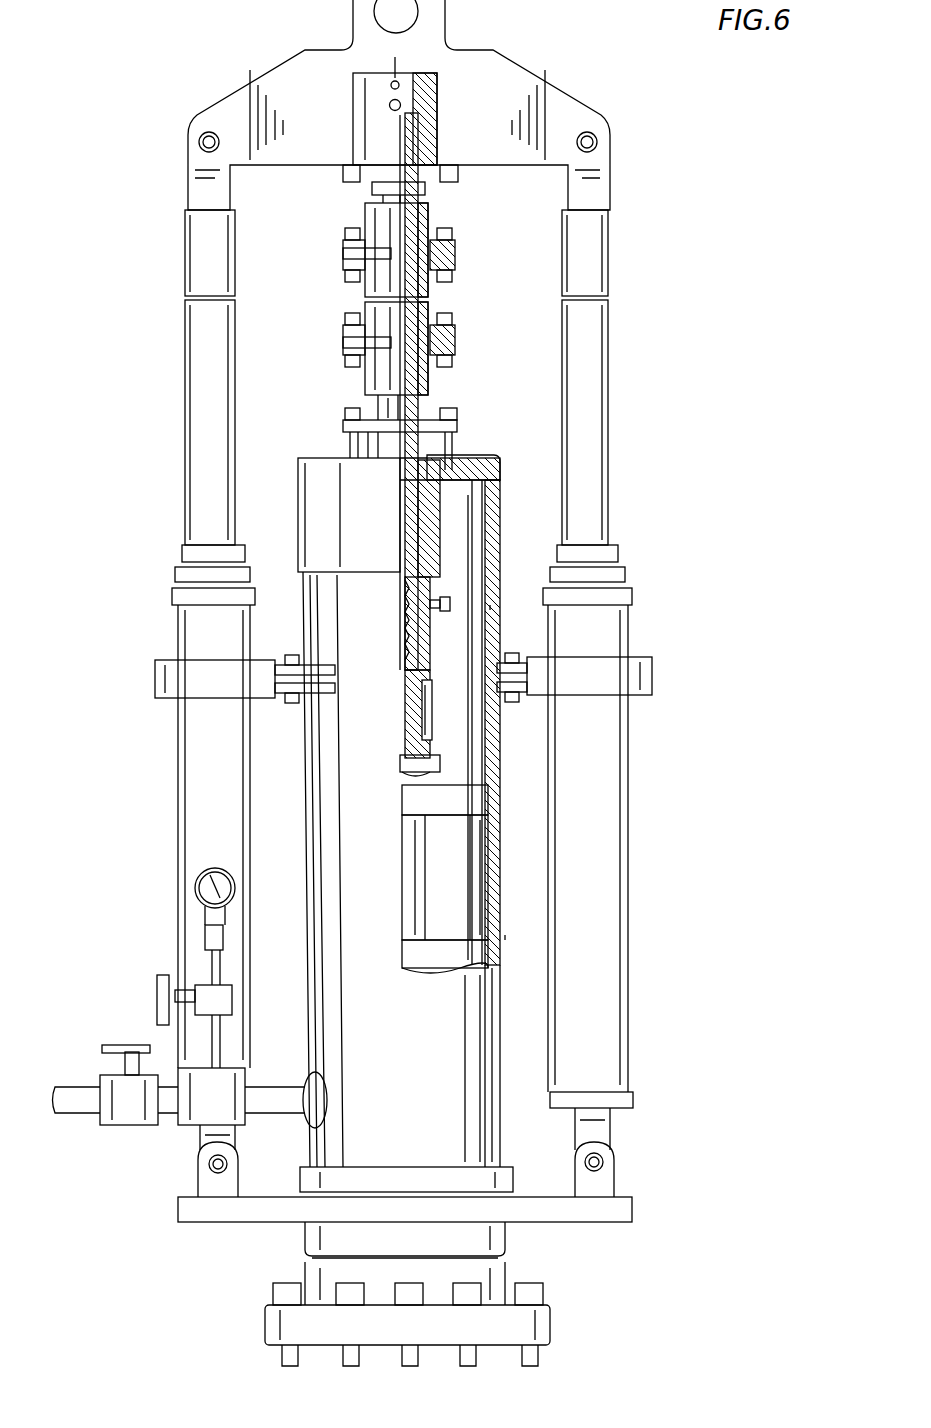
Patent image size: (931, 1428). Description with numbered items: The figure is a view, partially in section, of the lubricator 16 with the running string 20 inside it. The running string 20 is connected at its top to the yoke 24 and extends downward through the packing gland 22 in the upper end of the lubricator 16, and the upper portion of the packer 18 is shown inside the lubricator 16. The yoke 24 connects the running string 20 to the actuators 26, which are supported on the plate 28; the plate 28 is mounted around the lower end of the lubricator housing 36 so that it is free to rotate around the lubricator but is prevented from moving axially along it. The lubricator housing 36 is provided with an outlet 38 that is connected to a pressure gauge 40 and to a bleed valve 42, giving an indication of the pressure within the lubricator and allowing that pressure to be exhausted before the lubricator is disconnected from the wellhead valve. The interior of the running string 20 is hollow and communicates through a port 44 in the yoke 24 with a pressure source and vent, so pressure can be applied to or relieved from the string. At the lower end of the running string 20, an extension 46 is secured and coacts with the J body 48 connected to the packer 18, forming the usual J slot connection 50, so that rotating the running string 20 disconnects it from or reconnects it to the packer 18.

The lubricator 16 is at (500, 768).
The packer 18 is at (505, 935).
The running string 20 is at (420, 192).
The packing gland 22 is at (495, 457).
The yoke 24 is at (540, 82).
The actuators 26 is at (190, 772).
The plate 28 is at (632, 1202).
The lubricator housing 36 is at (490, 605).
The outlet 38 is at (298, 1103).
The pressure gauge 40 is at (196, 888).
The bleed valve 42 is at (133, 1128).
The port 44 is at (392, 107).
The extension 46 is at (432, 650).
The J body 48 is at (432, 745).
The J slot connection 50 is at (434, 708).